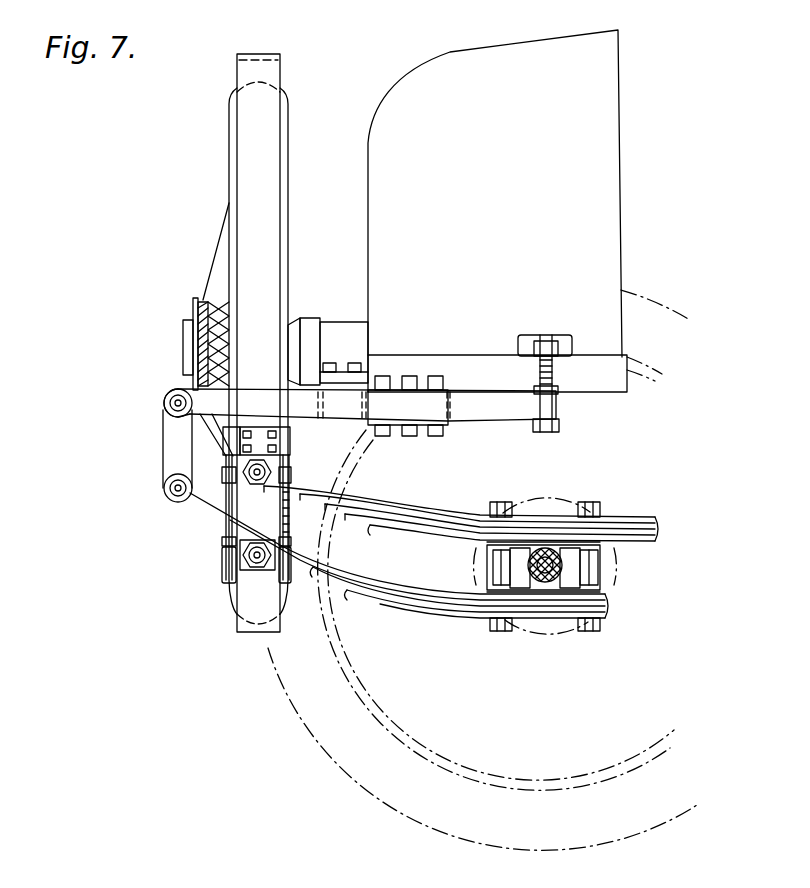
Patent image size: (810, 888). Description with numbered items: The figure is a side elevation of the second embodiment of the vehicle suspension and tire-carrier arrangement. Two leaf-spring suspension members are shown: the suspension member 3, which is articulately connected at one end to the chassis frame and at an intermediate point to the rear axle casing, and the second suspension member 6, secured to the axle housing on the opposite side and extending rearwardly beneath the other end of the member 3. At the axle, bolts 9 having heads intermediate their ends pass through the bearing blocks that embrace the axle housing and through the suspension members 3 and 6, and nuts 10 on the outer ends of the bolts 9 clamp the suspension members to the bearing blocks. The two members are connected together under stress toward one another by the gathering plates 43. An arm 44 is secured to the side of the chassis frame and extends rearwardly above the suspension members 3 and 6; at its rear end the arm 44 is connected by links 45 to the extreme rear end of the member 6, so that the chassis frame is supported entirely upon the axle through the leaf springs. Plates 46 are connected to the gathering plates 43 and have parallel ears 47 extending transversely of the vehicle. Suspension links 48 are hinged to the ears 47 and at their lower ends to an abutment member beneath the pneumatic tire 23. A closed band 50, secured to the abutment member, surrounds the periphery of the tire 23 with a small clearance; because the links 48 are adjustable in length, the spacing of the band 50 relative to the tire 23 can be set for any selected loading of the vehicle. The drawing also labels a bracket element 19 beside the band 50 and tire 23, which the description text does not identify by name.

The closed band 50 is at (246, 137).
The pneumatic tire 23 is at (231, 178).
The bracket with coil spring 19 is at (195, 300).
The arm 44 is at (196, 394).
The link 45 is at (166, 438).
The parallel ear 47 is at (240, 441).
The plate 46 is at (270, 415).
The gathering plate 43 is at (250, 512).
The suspension link 48 is at (229, 547).
The suspension member 3 is at (446, 518).
The second suspension member 6 is at (423, 612).
The bolt 9 is at (493, 565).
The nut 10 is at (510, 630).